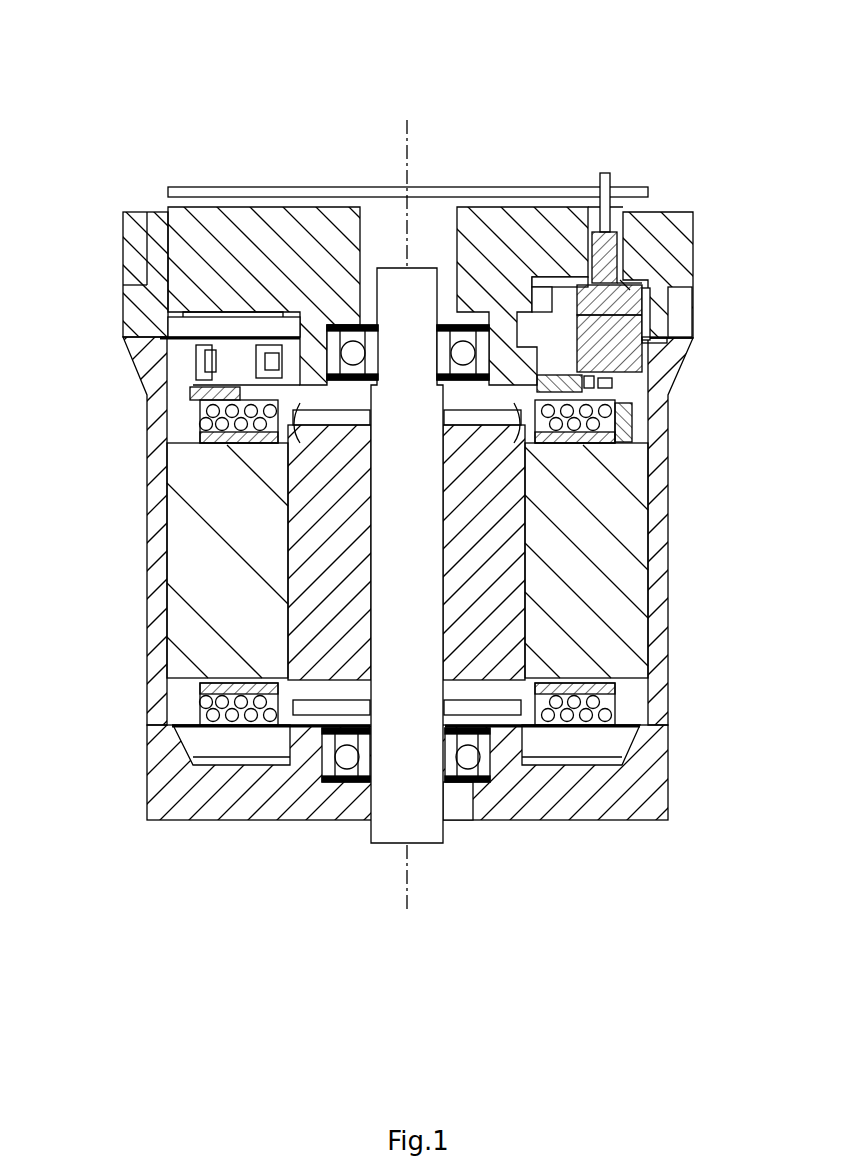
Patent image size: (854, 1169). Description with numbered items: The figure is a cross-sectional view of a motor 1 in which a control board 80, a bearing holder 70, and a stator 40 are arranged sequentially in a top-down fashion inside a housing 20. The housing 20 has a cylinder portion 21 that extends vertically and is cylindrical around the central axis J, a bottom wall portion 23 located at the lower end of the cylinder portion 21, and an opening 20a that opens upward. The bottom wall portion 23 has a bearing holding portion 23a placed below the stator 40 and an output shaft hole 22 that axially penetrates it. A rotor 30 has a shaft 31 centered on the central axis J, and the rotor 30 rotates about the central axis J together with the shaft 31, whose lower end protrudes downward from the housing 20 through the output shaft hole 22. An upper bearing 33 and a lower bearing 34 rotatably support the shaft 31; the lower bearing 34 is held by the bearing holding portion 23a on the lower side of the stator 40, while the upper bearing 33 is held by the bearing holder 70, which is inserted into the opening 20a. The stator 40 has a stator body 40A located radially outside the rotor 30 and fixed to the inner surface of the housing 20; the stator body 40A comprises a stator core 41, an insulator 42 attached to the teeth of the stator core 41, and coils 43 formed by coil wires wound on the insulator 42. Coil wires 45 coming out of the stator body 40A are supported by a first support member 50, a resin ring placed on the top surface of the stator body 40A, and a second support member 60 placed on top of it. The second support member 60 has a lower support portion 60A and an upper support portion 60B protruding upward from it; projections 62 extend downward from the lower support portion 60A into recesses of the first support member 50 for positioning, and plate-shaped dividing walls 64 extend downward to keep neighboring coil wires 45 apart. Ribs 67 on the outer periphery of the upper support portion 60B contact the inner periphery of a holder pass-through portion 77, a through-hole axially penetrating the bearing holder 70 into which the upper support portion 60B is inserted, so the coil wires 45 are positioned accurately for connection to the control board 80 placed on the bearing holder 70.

The motor 1 is at (723, 65).
The central axis J is at (406, 129).
The housing 20 is at (427, 525).
The opening 20a is at (168, 322).
The cylinder portion 21 is at (656, 602).
The output shaft hole 22 is at (345, 797).
The bottom wall portion 23 is at (427, 525).
The bearing holding portion 23a is at (512, 764).
The rotor 30 is at (505, 578).
The shaft 31 is at (430, 618).
The upper bearing 33 is at (461, 344).
The lower bearing 34 is at (363, 776).
The stator 40 is at (435, 535).
The stator body 40A is at (646, 489).
The stator core 41 is at (205, 550).
The insulator 42 is at (196, 432).
The coils 43 is at (200, 420).
The coil wires 45 is at (605, 172).
The first support member 50 is at (648, 391).
The second support member 60 is at (677, 313).
The lower support portion 60A is at (652, 325).
The upper support portion 60B is at (652, 282).
The projections 62 is at (626, 418).
The dividing walls 64 is at (540, 300).
The ribs 67 is at (628, 283).
The bearing holder 70 is at (232, 240).
The holder pass-through portion 77 is at (613, 232).
The control board 80 is at (445, 189).